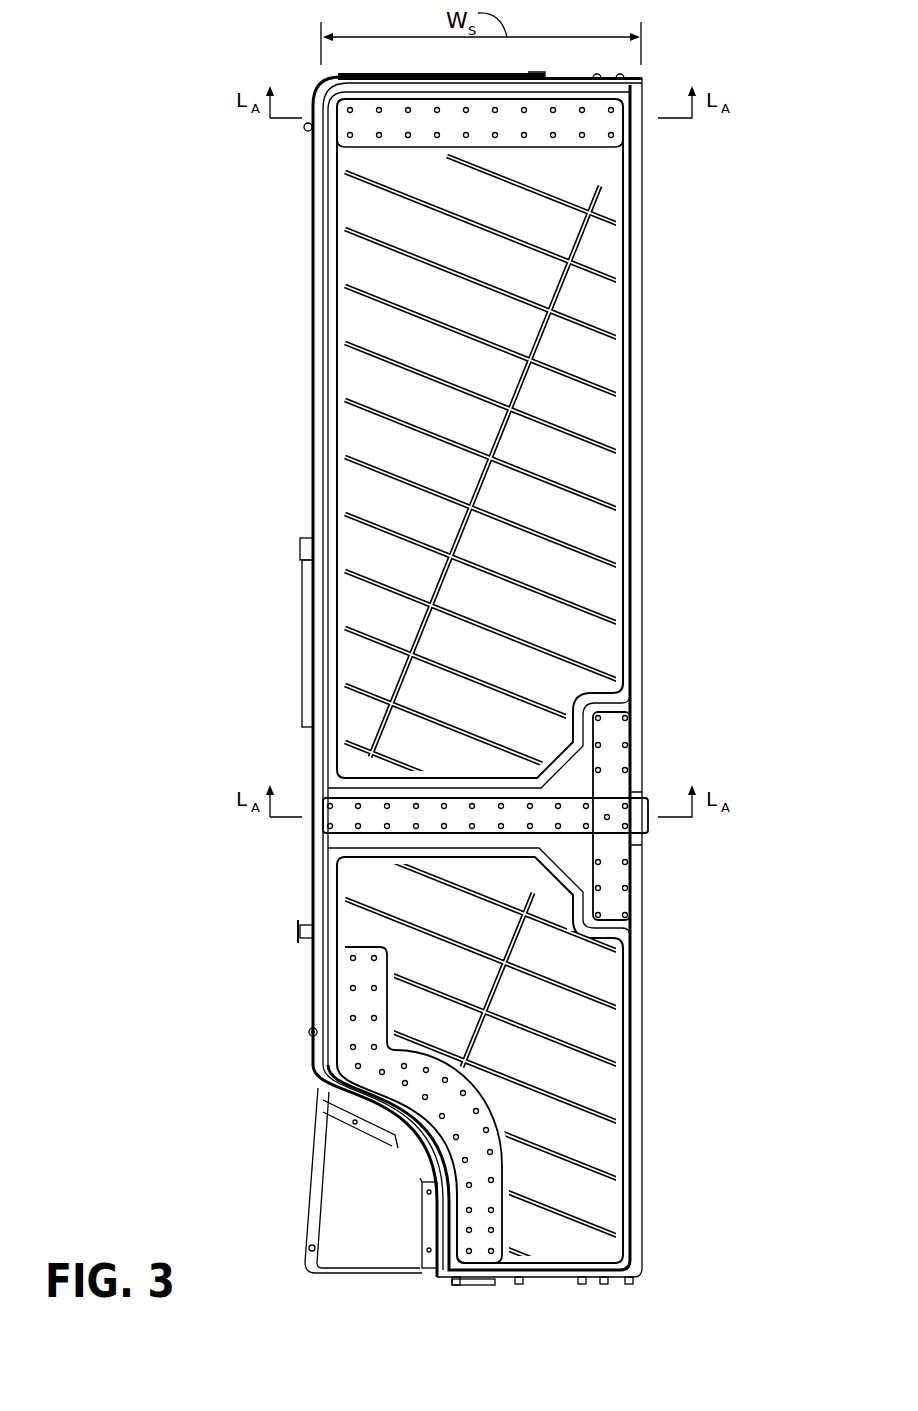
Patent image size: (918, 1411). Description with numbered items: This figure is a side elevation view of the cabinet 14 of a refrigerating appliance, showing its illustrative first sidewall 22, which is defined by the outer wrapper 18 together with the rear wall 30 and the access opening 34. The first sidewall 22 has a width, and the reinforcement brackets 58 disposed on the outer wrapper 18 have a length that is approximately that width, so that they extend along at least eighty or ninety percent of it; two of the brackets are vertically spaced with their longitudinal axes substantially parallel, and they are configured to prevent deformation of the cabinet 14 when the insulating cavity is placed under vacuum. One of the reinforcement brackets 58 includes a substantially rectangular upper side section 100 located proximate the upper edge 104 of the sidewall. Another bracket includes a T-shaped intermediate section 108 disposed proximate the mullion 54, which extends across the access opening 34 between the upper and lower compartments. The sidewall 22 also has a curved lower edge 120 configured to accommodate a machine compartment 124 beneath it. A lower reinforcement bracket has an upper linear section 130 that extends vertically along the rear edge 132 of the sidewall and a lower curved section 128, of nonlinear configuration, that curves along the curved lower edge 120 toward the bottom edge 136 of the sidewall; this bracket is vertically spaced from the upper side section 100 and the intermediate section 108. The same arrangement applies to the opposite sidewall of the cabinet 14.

The cabinet 14 is at (230, 256).
The outer wrapper 18 is at (560, 470).
The first sidewall 22 is at (590, 368).
The rear wall 30 is at (312, 308).
The access opening 34 is at (670, 607).
The mullion 54 is at (657, 832).
The reinforcement brackets 58 is at (584, 124).
The upper side section 100 is at (562, 123).
The upper edge 104 is at (418, 72).
The intermediate section 108 is at (612, 760).
The curved lower edge 120 is at (412, 1161).
The machine compartment 124 is at (368, 1207).
The lower curved section 128 is at (500, 1228).
The upper linear section 130 is at (360, 1023).
The rear edge 132 is at (304, 954).
The bottom edge 136 is at (600, 1290).